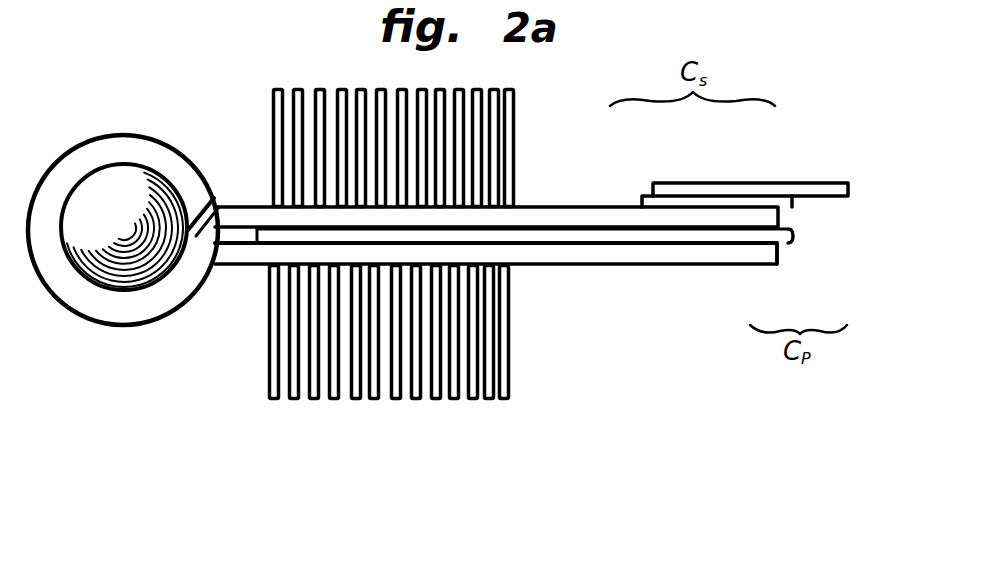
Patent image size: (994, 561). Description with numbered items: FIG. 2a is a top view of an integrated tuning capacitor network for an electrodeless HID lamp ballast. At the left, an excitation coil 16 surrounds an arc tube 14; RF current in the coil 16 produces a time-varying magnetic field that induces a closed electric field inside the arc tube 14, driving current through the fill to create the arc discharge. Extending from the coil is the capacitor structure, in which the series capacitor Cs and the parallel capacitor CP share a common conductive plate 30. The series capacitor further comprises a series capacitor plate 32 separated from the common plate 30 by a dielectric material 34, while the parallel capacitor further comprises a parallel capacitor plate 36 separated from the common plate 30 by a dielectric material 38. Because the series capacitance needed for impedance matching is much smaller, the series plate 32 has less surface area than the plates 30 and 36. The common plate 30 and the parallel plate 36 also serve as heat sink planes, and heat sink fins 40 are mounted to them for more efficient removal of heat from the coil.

The arc tube 14 is at (97, 260).
The coil 16 is at (186, 156).
The common conductive plate 30 is at (604, 206).
The series capacitor plate 32 is at (710, 183).
The dielectric material 34 is at (638, 197).
The parallel capacitor plate 36 is at (773, 266).
The dielectric material 38 is at (794, 237).
The heat sink fins 40 is at (435, 402).